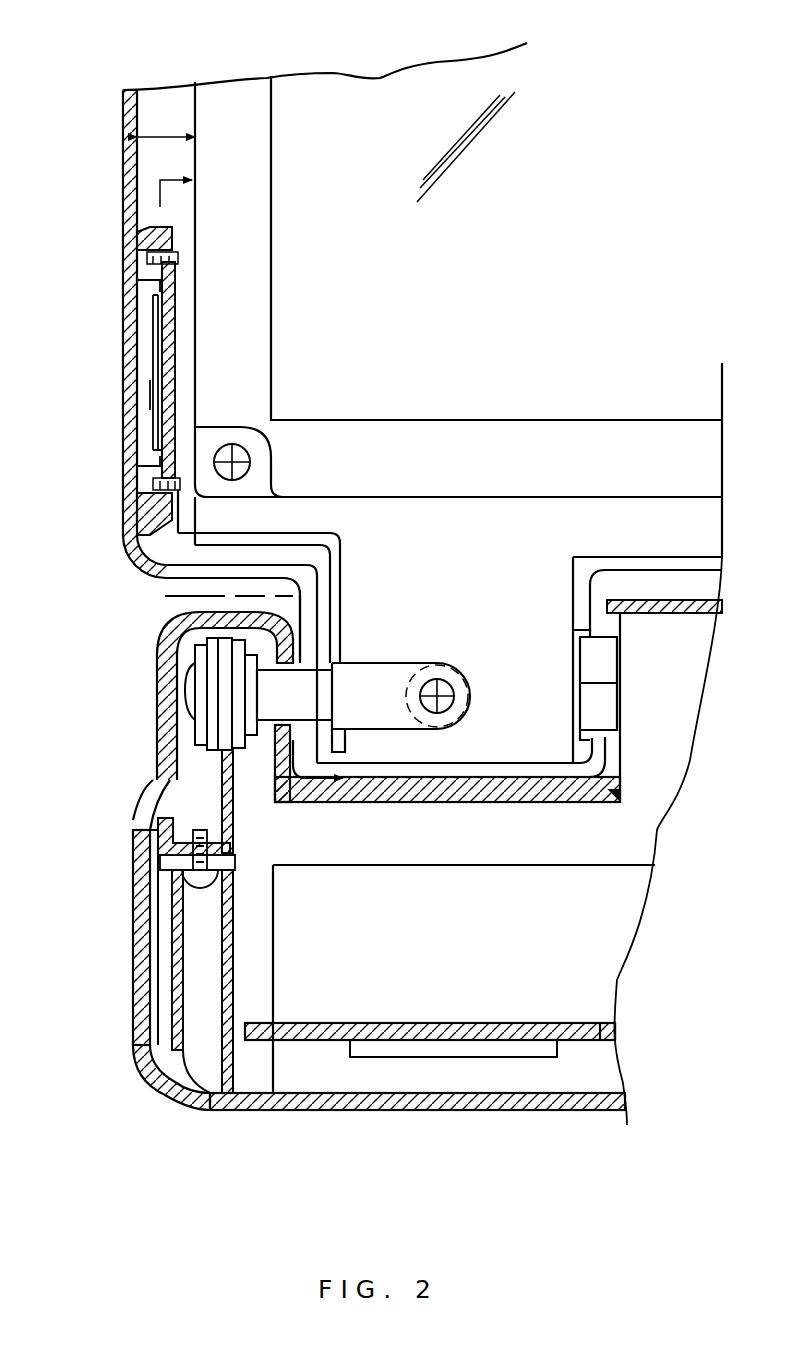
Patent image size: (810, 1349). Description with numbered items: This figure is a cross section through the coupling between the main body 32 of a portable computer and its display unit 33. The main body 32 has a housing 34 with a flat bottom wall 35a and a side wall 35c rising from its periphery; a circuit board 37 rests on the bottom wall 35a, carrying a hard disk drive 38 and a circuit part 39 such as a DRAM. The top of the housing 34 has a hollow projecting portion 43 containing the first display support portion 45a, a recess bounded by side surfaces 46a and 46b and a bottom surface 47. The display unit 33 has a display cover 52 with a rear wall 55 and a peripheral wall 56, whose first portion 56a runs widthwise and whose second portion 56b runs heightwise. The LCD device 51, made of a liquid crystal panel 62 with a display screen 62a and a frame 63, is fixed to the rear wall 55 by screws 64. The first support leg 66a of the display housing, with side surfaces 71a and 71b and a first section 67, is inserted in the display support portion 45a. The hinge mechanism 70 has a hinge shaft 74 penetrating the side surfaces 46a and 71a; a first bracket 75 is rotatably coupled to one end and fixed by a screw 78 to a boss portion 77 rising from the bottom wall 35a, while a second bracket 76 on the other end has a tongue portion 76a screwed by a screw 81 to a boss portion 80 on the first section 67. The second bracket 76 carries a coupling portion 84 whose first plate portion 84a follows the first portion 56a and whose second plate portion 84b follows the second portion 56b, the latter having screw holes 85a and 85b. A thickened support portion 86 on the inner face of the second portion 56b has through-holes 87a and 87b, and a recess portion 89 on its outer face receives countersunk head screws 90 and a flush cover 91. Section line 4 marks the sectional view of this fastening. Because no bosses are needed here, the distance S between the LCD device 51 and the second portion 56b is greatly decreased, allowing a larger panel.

The display unit 33 is at (237, 76).
The liquid crystal panel 62 is at (413, 86).
The display screen 62a is at (497, 168).
The display cover 52 is at (123, 106).
The second portion of peripheral wall 56b is at (123, 196).
The peripheral wall 56 is at (130, 421).
The screw hole 85a is at (175, 242).
The countersunk head screw 90 is at (148, 258).
The through-hole 87a is at (137, 286).
The cover 91 is at (152, 320).
The support portion 86 is at (150, 356).
The recess portion 89 is at (148, 396).
The second plate portion 84b is at (170, 397).
The through-hole 87b is at (152, 463).
The screw hole 85b is at (140, 526).
The rear wall 55 is at (190, 332).
The screw 64 is at (250, 461).
The frame 63 is at (705, 457).
The liquid crystal display device 51 is at (690, 378).
The distance S is at (168, 139).
The section line 4- 4 is at (266, 480).
The first portion of peripheral wall 56a is at (222, 560).
The coupling portion 84 is at (320, 533).
The first plate portion 84a is at (318, 548).
The projecting portion 43 is at (165, 648).
The hinge mechanism 70 is at (192, 679).
The first bracket 75 is at (235, 792).
The hinge shaft 74 is at (325, 696).
The second bracket 76 is at (365, 659).
The tongue portion 76a is at (395, 730).
The screw 81 is at (452, 690).
The boss portion 80 is at (468, 712).
The side surface 46a is at (325, 647).
The side surface 71a is at (282, 802).
The bottom surface 47 is at (405, 802).
The first section 67 is at (515, 790).
The first display support portion 45a is at (560, 790).
The side surface 46b is at (605, 740).
The first support leg 66a is at (640, 770).
The side surface 71b is at (607, 626).
The housing 34 is at (140, 820).
The screw 78 is at (235, 895).
The boss portion 77 is at (172, 912).
The side wall 35c is at (140, 1006).
The main body 32 is at (140, 1062).
The bottom wall 35a is at (360, 1112).
The hard disk drive 38 is at (628, 895).
The circuit part 39 is at (495, 1050).
The circuit board 37 is at (596, 1042).